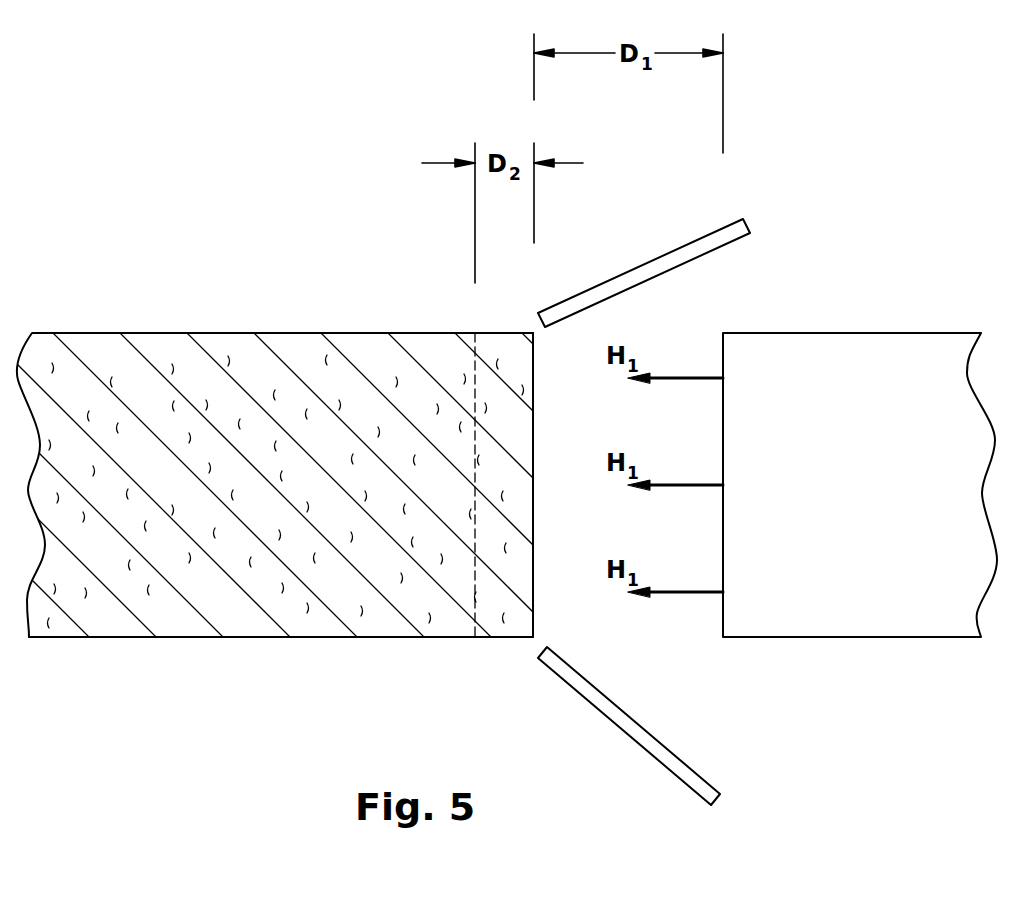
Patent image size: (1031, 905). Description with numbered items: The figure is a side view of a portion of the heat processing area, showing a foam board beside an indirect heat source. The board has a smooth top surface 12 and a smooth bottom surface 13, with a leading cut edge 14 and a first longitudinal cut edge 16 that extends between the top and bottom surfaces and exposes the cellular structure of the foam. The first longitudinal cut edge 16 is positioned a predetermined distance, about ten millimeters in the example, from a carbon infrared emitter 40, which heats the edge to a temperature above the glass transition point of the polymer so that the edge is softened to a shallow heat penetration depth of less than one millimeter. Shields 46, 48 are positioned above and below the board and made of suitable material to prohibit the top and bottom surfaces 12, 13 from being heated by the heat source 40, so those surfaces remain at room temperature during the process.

The top surface 12 is at (172, 333).
The bottom surface 13 is at (190, 638).
The leading cut edge 14 is at (283, 588).
The first longitudinal cut edge 16 is at (533, 583).
The carbon infrared emitter 40 is at (834, 333).
The shield 46 is at (667, 250).
The shield 48 is at (628, 738).